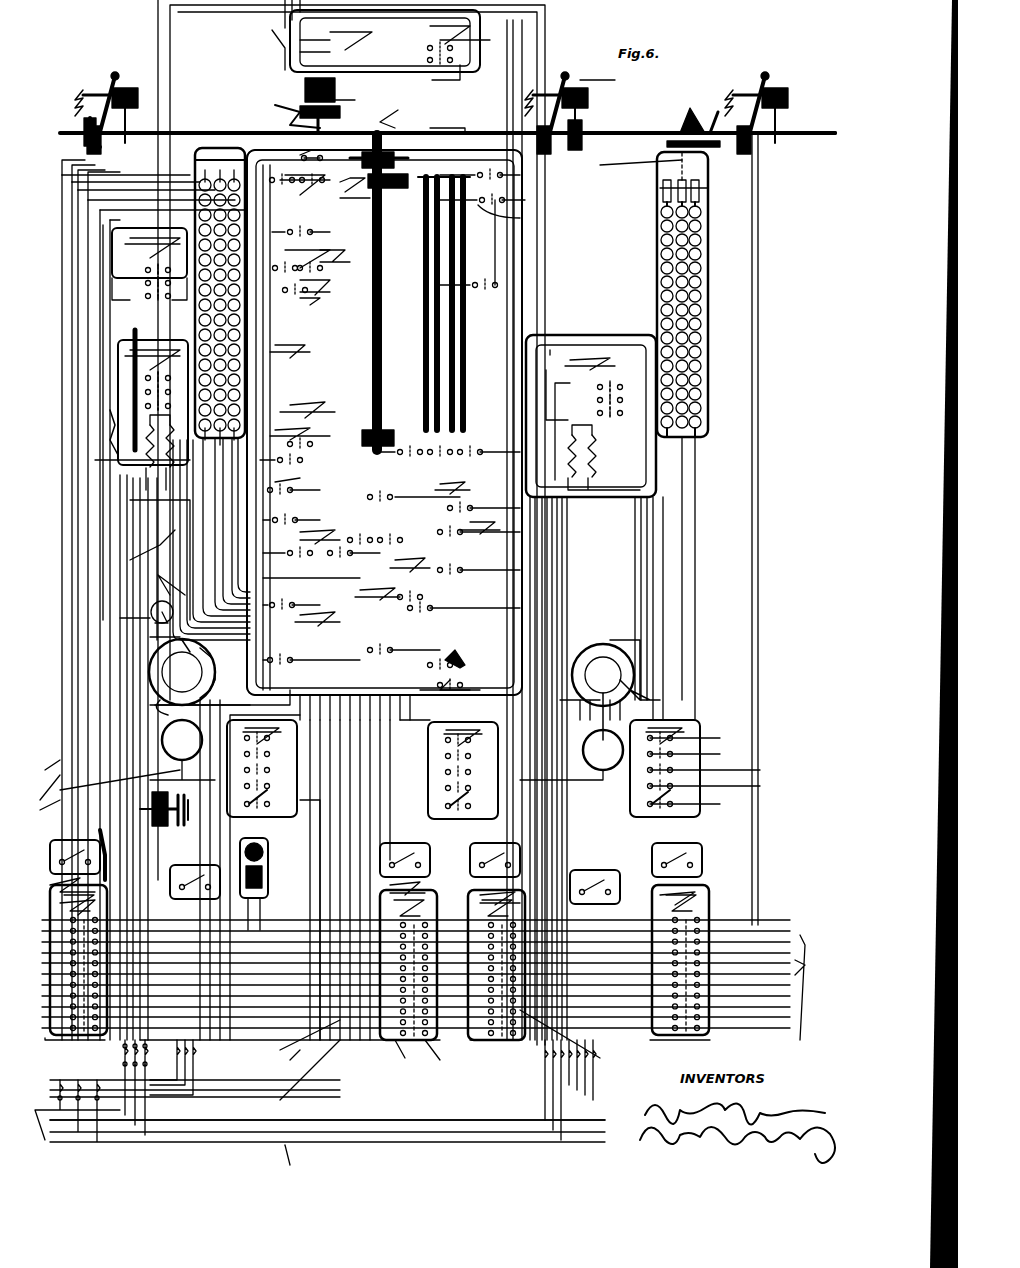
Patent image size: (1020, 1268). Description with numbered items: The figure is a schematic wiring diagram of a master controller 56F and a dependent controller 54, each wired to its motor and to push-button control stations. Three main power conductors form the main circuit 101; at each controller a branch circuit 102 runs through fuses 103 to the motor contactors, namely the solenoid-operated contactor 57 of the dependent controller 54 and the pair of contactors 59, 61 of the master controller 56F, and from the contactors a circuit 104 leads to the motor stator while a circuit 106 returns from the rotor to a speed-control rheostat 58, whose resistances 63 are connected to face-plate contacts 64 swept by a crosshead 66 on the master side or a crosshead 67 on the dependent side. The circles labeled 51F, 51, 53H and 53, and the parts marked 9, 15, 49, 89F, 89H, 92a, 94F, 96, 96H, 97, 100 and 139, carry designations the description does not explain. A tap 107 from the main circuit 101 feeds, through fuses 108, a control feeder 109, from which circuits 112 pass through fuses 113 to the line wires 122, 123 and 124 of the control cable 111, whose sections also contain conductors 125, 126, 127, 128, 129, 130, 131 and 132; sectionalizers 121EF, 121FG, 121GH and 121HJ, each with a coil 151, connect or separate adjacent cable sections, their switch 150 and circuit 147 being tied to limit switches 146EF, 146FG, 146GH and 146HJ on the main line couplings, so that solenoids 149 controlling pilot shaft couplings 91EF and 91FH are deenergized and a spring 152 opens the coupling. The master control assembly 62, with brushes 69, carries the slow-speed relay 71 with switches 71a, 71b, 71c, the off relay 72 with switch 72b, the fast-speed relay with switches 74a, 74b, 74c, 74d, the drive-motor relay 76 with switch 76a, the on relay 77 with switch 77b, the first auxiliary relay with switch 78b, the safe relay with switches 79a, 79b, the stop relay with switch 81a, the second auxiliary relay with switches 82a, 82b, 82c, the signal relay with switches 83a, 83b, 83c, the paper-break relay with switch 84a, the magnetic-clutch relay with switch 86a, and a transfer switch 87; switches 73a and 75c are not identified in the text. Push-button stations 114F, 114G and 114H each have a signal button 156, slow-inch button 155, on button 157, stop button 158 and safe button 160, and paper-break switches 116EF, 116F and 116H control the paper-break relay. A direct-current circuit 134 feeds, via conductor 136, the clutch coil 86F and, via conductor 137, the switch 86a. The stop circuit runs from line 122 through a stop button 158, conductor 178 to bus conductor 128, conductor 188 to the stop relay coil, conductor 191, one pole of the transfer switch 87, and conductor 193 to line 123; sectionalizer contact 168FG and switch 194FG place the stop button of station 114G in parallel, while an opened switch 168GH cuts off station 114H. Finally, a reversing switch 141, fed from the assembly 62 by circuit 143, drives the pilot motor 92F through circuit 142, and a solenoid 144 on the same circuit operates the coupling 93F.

The contact 9 is at (313, 158).
The connection 15 is at (50, 763).
The lamp 49 is at (150, 610).
The motor 51 is at (182, 750).
The motor F 51F is at (219, 677).
The motor 53 is at (571, 755).
The motor H 53H is at (616, 690).
The dependent controller 54 is at (660, 296).
The master controller 56F is at (368, 366).
The motor contactor 57 is at (591, 416).
The speed control rheostat 58 is at (216, 140).
The motor contactor 59 is at (130, 262).
The motor contactor 61 is at (130, 370).
The master control assembly 62 is at (384, 422).
The resistances 63 is at (200, 212).
The face-plate contacts 64 is at (246, 387).
The crosshead 66 is at (360, 195).
The crosshead 67 is at (700, 190).
The brushes 69 is at (455, 345).
The slow-speed relay 71 is at (340, 280).
The switch of slow-speed relay 71a is at (315, 310).
The switch of slow-speed relay 71b is at (520, 218).
The switch of slow-speed relay 71c is at (439, 457).
The off relay 72 is at (300, 439).
The switch of off relay 72b is at (389, 533).
The contact 73a is at (354, 552).
The switch of fast-speed relay 74a is at (469, 253).
The switch of fast-speed relay 74b is at (489, 457).
The switch of fast-speed relay 74c is at (447, 650).
The switch of fast-speed relay 74d is at (464, 607).
The contact 75c is at (401, 457).
The drive motor relay 76 is at (298, 456).
The switch of drive motor relay 76a is at (294, 487).
The on relay 77 is at (320, 532).
The switch of on relay 77b is at (480, 167).
The switch of first auxiliary relay 78b is at (302, 255).
The switch of safe relay 79a is at (300, 184).
The switch of safe relay 79b is at (339, 249).
The switch of stop relay 81a is at (525, 200).
The switch of second auxiliary relay 82a is at (318, 230).
The switch of second auxiliary relay 82b is at (414, 491).
The switch of second auxiliary relay 82c is at (291, 513).
The switch of signal relay 83a is at (484, 506).
The switch of signal relay 83b is at (477, 528).
The switch of signal relay 83c is at (291, 598).
The switch of paper break relay 84a is at (479, 563).
The switch of magnetic clutch relay 86a is at (310, 650).
The lead 86F is at (120, 784).
The transfer switch 87 is at (460, 670).
The bus 89F is at (515, 100).
The bus 89H is at (650, 120).
The pilot shaft coupling 91EF is at (85, 140).
The pilot shaft coupling 91FH is at (575, 150).
The contact 92a is at (316, 441).
The pilot motor 92F is at (338, 95).
The coupling 93F is at (318, 116).
The contact 94F is at (395, 122).
The lead 96 is at (447, 114).
The contact 96H is at (693, 117).
The bar 97 is at (680, 150).
The leads 100 is at (230, 520).
The main electric circuit 101 is at (290, 1140).
The branch circuit 102 is at (565, 518).
The fuses 103 is at (122, 1066).
The circuit 104 is at (616, 564).
The circuit 106 is at (685, 482).
The tap 107 is at (100, 1130).
The fuses 108 is at (40, 1120).
The control circuit feeder 109 is at (300, 1100).
The main control cable 111 is at (815, 987).
The circuits 112 is at (200, 1045).
The fuses 113 is at (615, 1062).
The push-button station 114F is at (300, 740).
The push-button station 114G is at (479, 770).
The push-button station 114H is at (700, 820).
The paper break switch 116EF is at (75, 881).
The paper break switch 116F is at (182, 870).
The paper break switch 116H is at (578, 870).
The sectionalizer 121EF is at (70, 1042).
The sectionalizer 121FG is at (400, 1045).
The sectionalizer 121GH is at (478, 1045).
The sectionalizer 121HJ is at (712, 918).
The control-cable conductor 122 is at (416, 930).
The control-cable conductor 123 is at (421, 938).
The control-cable conductor 124 is at (416, 950).
The control-cable conductor 125 is at (421, 958).
The control-cable conductor 126 is at (416, 970).
The control-cable conductor 127 is at (421, 979).
The control bus conductor 128 is at (416, 990).
The control-cable conductor 129 is at (421, 999).
The control-cable conductor 130 is at (416, 1011).
The control-cable conductor 131 is at (421, 1019).
The control-cable conductor 132 is at (416, 1031).
The direct-current circuit 134 is at (285, 1040).
The conductor 136 is at (150, 848).
The conductor 137 is at (173, 801).
The contact 139 is at (385, 650).
The reversing switch 141 is at (390, 41).
The circuit 142 is at (448, 77).
The circuit 143 is at (272, 46).
The solenoid 144 is at (310, 85).
The limit switch 146EF is at (50, 796).
The limit switch 146FG is at (399, 851).
The limit switch 146GH is at (495, 845).
The limit switch 146HJ is at (700, 858).
The circuit 147 is at (716, 884).
The solenoid 149 is at (122, 88).
The sectionalizer switch 150 is at (110, 910).
The sectionalizer coil 151 is at (700, 900).
The spring 152 is at (585, 113).
The slow-inch button 155 is at (690, 754).
The signal button 156 is at (660, 740).
The on button 157 is at (731, 770).
The stop button 158 is at (720, 787).
The safe button 160 is at (700, 808).
The sectionalizer contact 168FG is at (418, 1059).
The sectionalizer switch 168GH is at (600, 1040).
The conductor 178 is at (300, 800).
The conductor 188 is at (311, 572).
The conductor 191 is at (284, 548).
The conductor 193 is at (460, 680).
The sectionalizer switch 194FG is at (300, 1105).